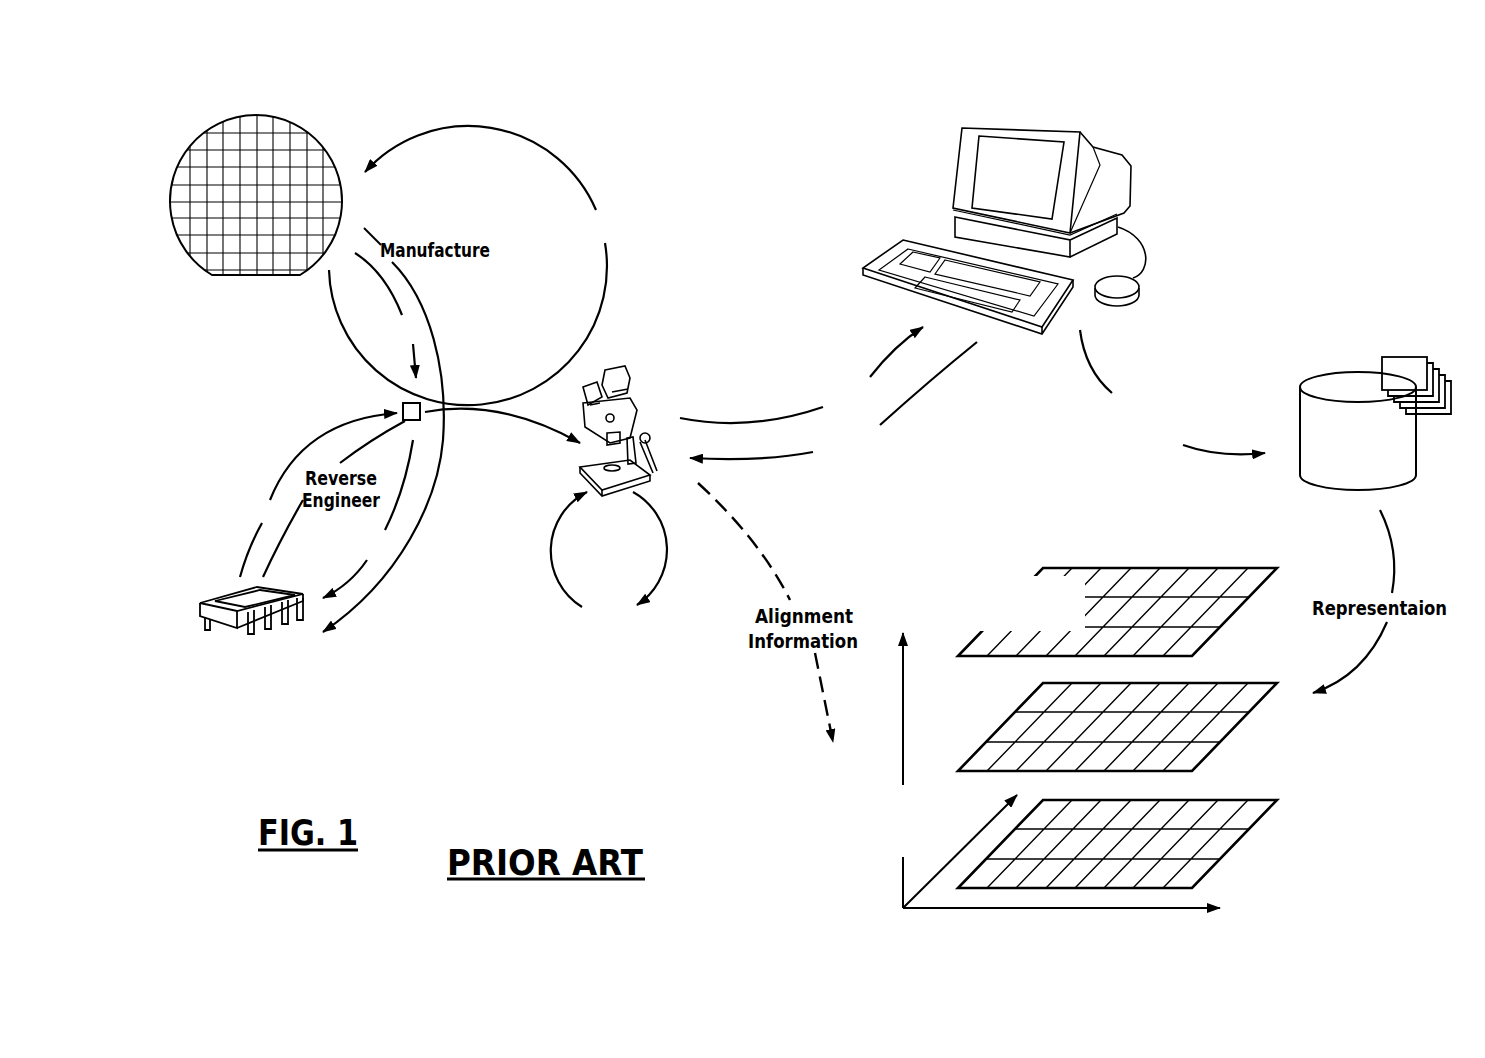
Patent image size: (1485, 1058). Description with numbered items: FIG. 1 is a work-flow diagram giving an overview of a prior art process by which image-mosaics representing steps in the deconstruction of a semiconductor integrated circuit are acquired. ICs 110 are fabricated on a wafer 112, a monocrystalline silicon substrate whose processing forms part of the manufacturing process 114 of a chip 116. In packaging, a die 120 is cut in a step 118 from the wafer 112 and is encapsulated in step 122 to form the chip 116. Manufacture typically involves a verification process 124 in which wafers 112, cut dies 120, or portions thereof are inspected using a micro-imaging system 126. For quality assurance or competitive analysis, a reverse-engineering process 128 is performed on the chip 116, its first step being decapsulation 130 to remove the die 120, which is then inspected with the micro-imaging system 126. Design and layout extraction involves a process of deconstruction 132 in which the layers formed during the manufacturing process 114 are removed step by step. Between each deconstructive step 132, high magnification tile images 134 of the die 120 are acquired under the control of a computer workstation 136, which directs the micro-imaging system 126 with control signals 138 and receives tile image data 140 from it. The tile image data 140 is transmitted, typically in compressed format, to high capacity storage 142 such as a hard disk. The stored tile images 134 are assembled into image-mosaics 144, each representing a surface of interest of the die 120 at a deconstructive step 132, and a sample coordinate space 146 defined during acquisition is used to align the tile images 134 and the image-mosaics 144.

The integrated circuits 110 is at (312, 158).
The wafer 112 is at (246, 196).
The manufacturing process 114 is at (438, 538).
The chip 116 is at (240, 585).
The cutting step 118 is at (363, 267).
The die 120 is at (363, 388).
The encapsulation step 122 is at (360, 568).
The verification process 124 is at (567, 168).
The micro-imaging system 126 is at (580, 480).
The reverse-engineering process 128 is at (477, 422).
The decapsulation 130 is at (305, 452).
The deconstruction process 132 is at (618, 667).
The tile images 134 is at (1415, 368).
The computer workstation 136 is at (1108, 168).
The control signals 138 is at (803, 453).
The tile image data 140 is at (900, 355).
The high capacity storage 142 is at (1330, 383).
The image-mosaics 144 is at (1237, 562).
The sample coordinate space 146 is at (890, 890).